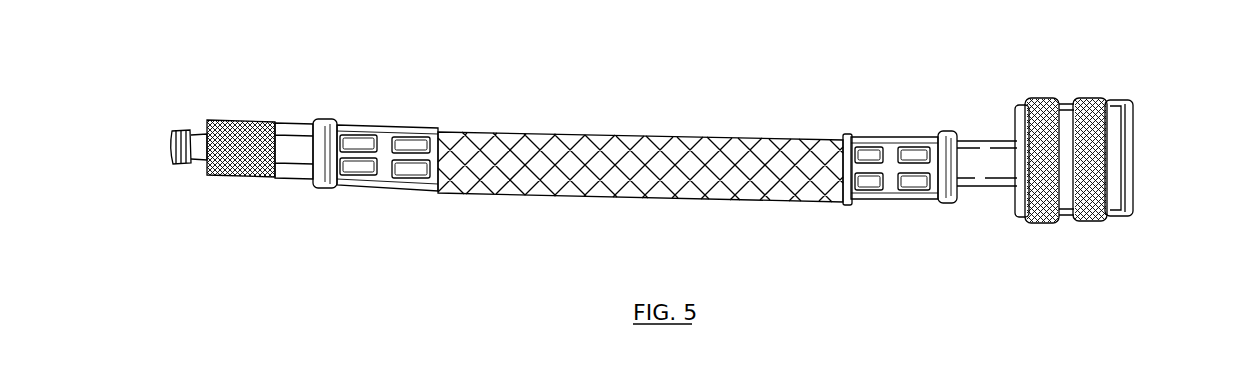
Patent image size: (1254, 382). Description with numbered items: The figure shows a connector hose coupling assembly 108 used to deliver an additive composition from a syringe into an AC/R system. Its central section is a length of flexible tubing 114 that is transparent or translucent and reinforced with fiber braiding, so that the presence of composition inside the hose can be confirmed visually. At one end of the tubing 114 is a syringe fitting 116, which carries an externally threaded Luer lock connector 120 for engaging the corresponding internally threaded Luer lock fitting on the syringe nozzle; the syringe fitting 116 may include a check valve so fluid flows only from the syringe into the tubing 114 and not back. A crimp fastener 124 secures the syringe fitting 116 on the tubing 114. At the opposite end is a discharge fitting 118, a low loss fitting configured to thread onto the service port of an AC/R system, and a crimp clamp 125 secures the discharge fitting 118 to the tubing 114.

The connector hose coupling assembly 108 is at (680, 130).
The flexible tubing 114 is at (593, 201).
The syringe fitting 116 is at (238, 178).
The discharge fitting 118 is at (1037, 97).
The externally threaded Luer lock connector 120 is at (190, 127).
The crimp fastener 124 is at (380, 125).
The crimp clamp 125 is at (888, 137).